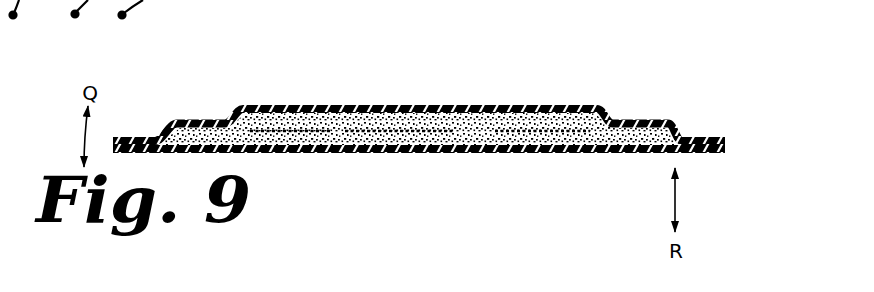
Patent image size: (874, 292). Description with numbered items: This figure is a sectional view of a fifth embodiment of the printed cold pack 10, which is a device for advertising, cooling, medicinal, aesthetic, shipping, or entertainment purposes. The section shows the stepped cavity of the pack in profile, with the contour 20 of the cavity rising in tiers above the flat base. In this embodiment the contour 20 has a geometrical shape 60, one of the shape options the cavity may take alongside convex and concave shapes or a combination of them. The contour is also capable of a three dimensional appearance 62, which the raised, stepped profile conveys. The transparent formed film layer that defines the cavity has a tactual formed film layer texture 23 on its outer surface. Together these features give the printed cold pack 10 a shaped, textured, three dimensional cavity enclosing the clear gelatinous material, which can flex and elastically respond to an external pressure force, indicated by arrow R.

The printed cold pack 10 is at (380, 102).
The contour 20 is at (618, 111).
The tactual formed film layer texture 23 is at (285, 104).
The geometrical shape 60 is at (587, 111).
The three dimensional appearance 62 is at (673, 112).